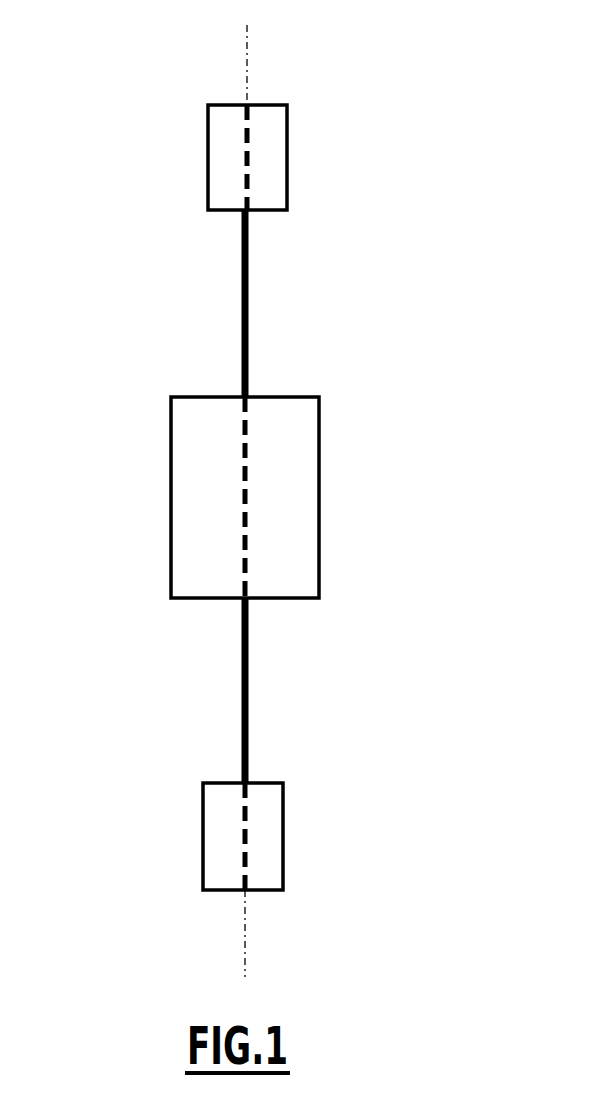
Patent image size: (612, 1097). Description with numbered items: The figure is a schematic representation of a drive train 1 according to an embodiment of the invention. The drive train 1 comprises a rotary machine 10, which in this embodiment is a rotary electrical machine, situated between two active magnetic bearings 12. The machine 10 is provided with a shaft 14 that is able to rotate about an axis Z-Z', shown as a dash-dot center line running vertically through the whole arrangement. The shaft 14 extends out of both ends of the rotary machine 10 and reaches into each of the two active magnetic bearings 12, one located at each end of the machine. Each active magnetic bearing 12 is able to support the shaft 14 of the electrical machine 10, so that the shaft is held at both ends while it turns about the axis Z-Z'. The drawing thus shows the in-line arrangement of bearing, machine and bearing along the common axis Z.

The drive train 1 is at (130, 83).
The rotary machine 10 is at (171, 492).
The active magnetic bearing 12 is at (208, 160).
The shaft 14 is at (243, 313).
The axis Z-Z' Z is at (229, 497).